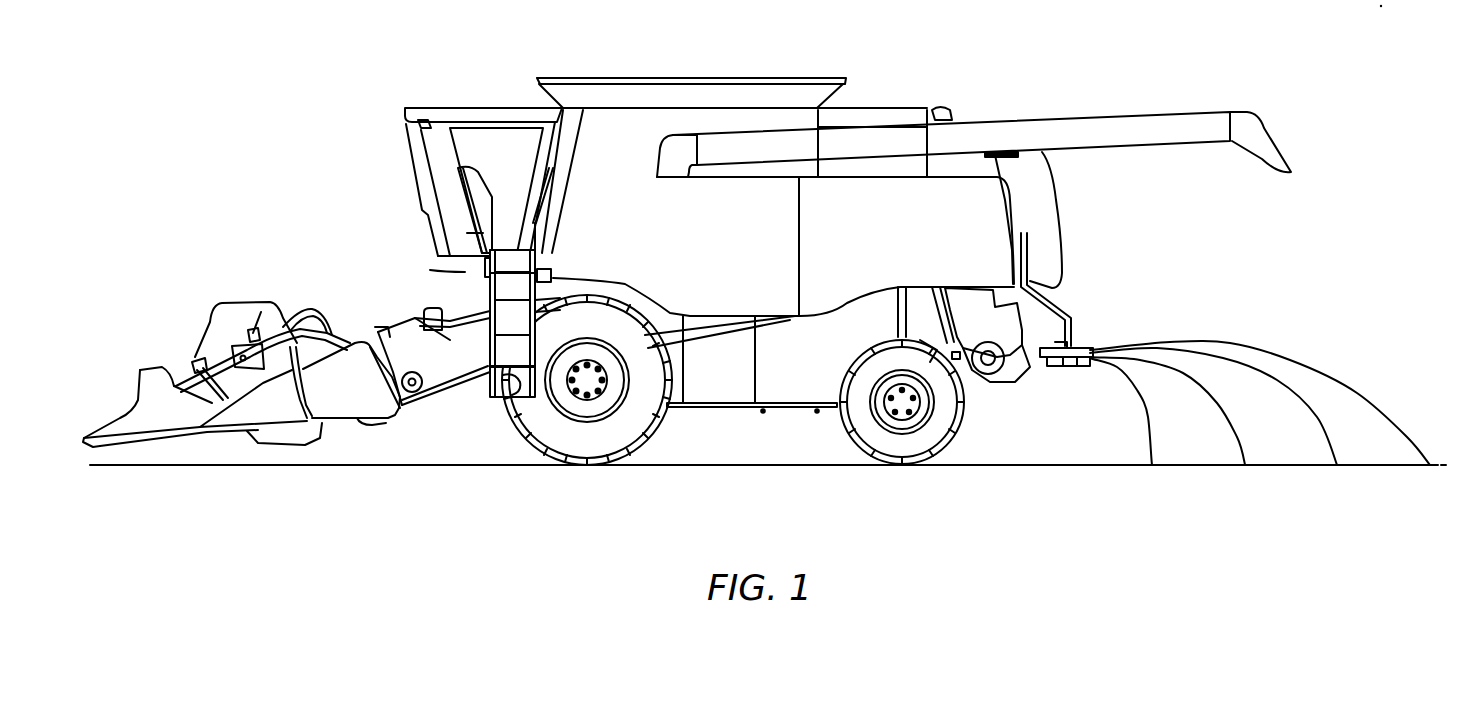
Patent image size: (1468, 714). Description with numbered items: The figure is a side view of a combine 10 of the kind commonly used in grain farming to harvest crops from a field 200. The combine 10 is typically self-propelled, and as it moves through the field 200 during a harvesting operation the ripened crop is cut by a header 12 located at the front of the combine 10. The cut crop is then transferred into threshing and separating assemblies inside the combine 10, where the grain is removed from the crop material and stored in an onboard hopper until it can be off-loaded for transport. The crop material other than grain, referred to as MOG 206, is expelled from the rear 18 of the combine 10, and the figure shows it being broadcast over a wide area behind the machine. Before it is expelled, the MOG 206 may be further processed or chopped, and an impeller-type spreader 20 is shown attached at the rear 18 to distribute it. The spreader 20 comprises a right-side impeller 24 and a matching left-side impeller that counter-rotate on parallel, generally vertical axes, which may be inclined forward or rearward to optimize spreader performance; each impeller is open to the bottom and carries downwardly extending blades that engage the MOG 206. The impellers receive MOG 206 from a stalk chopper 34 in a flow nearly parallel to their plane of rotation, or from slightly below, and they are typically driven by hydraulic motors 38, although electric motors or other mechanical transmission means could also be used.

The combine 10 is at (373, 82).
The header 12 is at (175, 348).
The rear of the combine 18 is at (1072, 225).
The spreader 20 is at (1088, 344).
The right-side impeller 24 is at (1075, 373).
The stalk chopper 34 is at (993, 382).
The hydraulic motor 38 is at (1064, 313).
The field 200 is at (343, 466).
The crop material other than grain (MOG) 206 is at (1221, 342).